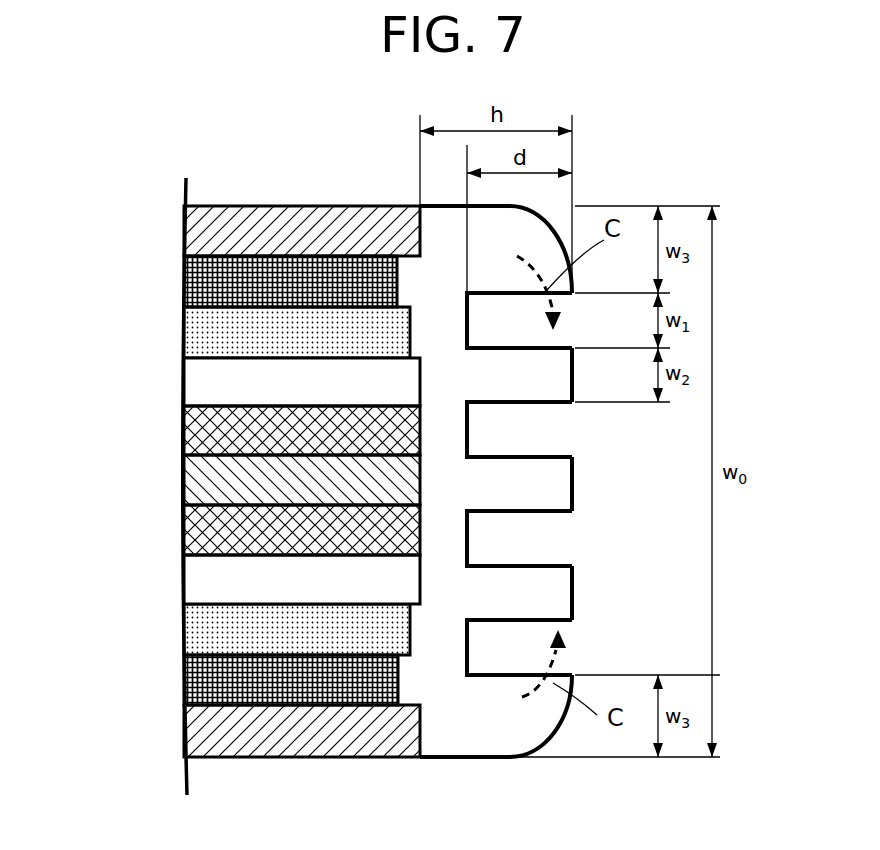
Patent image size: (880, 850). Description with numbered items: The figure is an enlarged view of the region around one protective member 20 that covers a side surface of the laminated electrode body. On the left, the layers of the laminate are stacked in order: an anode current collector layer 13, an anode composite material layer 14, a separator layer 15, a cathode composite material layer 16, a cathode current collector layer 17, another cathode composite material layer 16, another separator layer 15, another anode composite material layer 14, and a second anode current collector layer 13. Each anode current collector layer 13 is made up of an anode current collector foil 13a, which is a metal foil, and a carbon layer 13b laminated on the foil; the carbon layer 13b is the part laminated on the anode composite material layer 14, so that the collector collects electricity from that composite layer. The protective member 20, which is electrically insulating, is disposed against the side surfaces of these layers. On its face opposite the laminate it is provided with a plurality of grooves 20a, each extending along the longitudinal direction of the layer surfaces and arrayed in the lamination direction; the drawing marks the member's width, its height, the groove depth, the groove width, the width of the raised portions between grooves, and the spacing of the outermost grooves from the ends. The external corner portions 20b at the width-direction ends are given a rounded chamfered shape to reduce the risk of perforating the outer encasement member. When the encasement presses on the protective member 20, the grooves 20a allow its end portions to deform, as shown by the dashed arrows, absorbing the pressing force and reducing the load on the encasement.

The anode current collector layer 13 is at (222, 481).
The anode current collector foil 13a is at (185, 236).
The carbon layer 13b is at (243, 480).
The anode composite material layer 14 is at (210, 337).
The separator layer 15 is at (205, 388).
The cathode composite material layer 16 is at (200, 438).
The cathode current collector layer 17 is at (205, 488).
The protective member 20 is at (608, 482).
The groove 20a is at (579, 320).
The external corner portion 20b is at (556, 225).